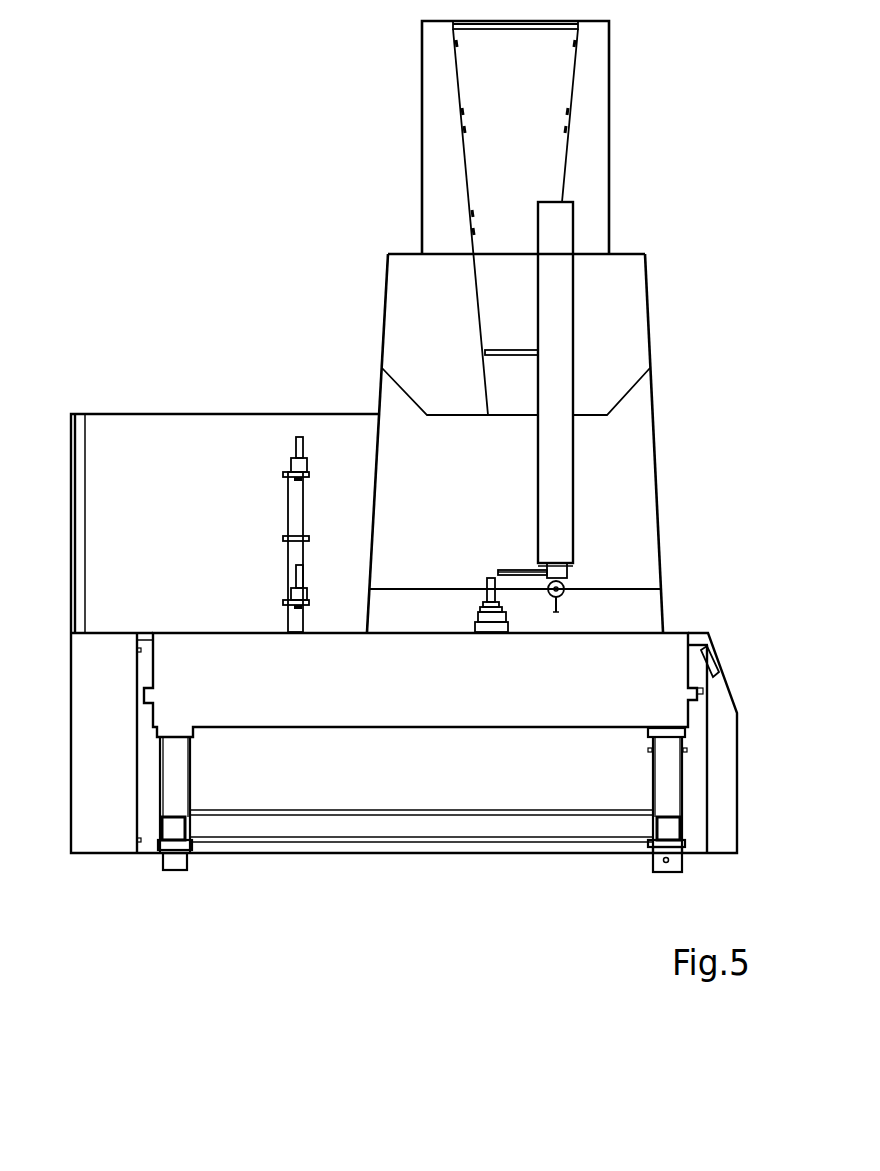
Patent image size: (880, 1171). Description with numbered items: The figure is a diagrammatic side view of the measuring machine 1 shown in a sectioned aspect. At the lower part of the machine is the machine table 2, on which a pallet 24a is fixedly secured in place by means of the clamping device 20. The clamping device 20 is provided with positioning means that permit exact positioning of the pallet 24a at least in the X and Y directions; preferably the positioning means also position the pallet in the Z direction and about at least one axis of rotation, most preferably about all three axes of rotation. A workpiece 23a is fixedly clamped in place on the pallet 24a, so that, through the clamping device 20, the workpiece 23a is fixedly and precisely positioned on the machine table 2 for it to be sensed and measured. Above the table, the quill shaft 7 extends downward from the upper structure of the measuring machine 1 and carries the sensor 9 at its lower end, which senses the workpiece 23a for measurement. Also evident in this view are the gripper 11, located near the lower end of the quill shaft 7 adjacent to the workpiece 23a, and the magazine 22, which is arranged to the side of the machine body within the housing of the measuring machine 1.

The measuring machine 1 is at (373, 140).
The machine table 2 is at (440, 687).
The quill shaft 7 is at (553, 520).
The sensor 9 is at (575, 607).
The gripper 11 is at (507, 550).
The clamping device 20 is at (450, 616).
The magazine 22 is at (281, 423).
The workpiece 23a is at (489, 578).
The pallet 24a is at (486, 605).